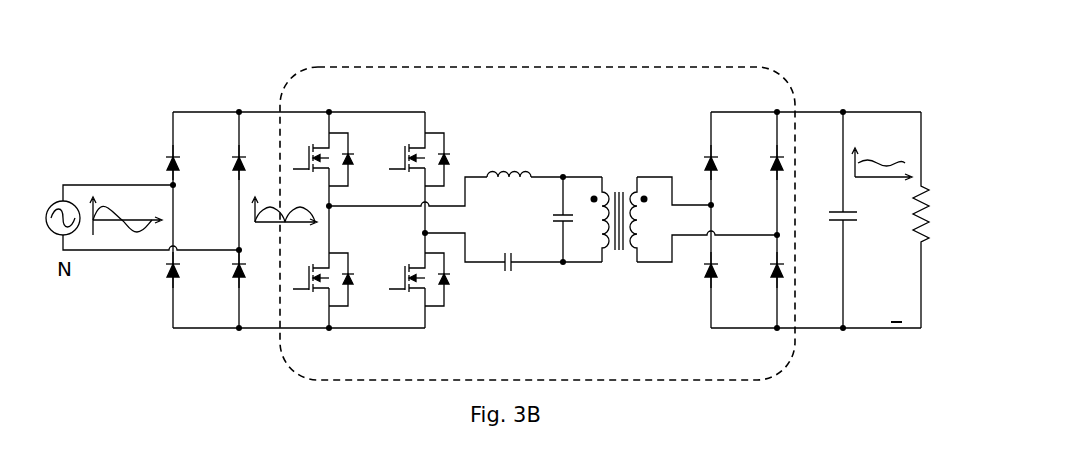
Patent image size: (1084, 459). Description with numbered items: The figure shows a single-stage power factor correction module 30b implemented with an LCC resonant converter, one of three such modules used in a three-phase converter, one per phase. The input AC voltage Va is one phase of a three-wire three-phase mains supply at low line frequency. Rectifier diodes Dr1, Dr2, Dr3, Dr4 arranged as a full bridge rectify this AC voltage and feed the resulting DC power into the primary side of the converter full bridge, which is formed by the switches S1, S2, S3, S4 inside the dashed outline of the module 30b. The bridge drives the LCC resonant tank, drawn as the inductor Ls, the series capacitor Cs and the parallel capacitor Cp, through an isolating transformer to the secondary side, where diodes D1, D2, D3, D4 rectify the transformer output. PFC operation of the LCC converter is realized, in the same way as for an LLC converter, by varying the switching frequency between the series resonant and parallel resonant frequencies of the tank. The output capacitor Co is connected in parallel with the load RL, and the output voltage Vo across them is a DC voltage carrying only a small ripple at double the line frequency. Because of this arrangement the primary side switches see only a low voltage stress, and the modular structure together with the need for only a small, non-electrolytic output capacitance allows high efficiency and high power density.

The single-stage PFC module 30b is at (717, 67).
The input AC voltage Va is at (142, 203).
The rectifier diode Dr1 is at (155, 162).
The rectifier diode Dr2 is at (155, 270).
The rectifier diode Dr3 is at (222, 162).
The rectifier diode Dr4 is at (222, 270).
The primary side switch S1 is at (318, 159).
The switching transistor S2 is at (318, 278).
The switching transistor S3 is at (411, 159).
The switching transistor S4 is at (411, 279).
The resonant inductor Ls is at (509, 160).
The series resonant capacitor Cs is at (508, 278).
The parallel resonant capacitor Cp is at (548, 219).
The output rectifier diode D1 is at (697, 162).
The output rectifier diode D2 is at (697, 270).
The output rectifier diode D3 is at (763, 162).
The output rectifier diode D4 is at (763, 270).
The output capacitor Co is at (829, 220).
The output voltage Vo is at (882, 217).
The load RL is at (934, 220).